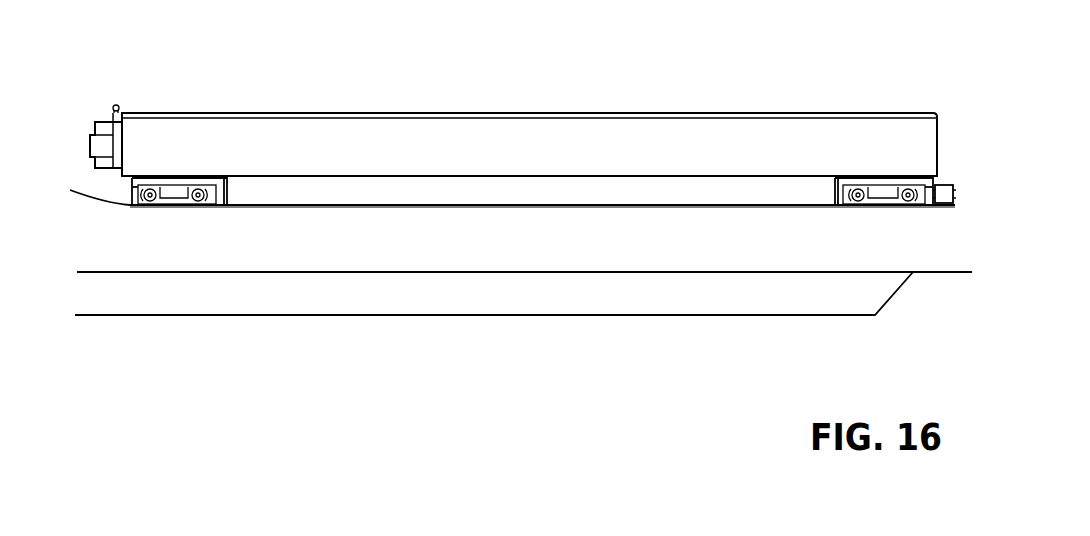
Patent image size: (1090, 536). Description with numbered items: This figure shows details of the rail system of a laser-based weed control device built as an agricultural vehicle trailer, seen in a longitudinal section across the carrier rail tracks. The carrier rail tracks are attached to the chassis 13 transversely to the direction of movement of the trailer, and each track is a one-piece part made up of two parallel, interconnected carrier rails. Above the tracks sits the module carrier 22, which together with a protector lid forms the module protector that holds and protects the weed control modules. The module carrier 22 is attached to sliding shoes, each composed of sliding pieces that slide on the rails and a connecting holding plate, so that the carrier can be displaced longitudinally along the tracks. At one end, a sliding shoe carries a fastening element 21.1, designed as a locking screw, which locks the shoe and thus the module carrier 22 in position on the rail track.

The chassis 13 is at (272, 238).
The fastening element 21.1 is at (948, 195).
The module carrier 22 is at (388, 143).